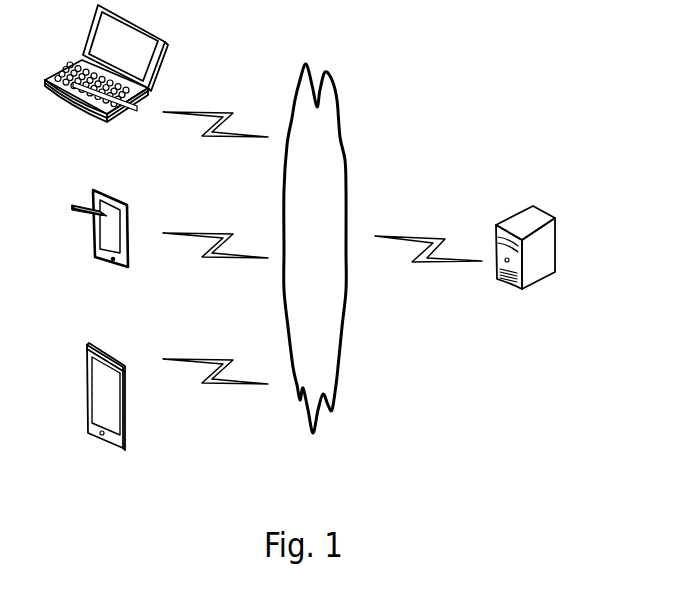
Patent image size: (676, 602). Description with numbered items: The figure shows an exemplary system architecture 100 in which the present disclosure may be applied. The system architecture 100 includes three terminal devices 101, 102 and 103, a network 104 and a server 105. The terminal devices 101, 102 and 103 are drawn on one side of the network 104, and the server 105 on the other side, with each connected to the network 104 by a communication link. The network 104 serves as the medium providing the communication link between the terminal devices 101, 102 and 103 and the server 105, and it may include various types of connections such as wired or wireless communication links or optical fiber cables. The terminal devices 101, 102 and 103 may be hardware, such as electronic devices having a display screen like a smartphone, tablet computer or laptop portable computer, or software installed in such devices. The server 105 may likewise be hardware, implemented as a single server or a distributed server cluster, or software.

The system architecture 100 is at (552, 49).
The terminal device 101 is at (106, 414).
The terminal device 102 is at (100, 244).
The terminal device 103 is at (106, 78).
The network 104 is at (322, 248).
The server 105 is at (525, 268).